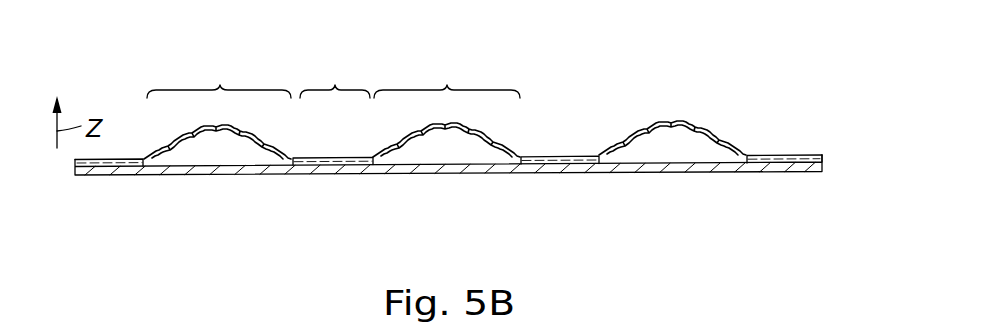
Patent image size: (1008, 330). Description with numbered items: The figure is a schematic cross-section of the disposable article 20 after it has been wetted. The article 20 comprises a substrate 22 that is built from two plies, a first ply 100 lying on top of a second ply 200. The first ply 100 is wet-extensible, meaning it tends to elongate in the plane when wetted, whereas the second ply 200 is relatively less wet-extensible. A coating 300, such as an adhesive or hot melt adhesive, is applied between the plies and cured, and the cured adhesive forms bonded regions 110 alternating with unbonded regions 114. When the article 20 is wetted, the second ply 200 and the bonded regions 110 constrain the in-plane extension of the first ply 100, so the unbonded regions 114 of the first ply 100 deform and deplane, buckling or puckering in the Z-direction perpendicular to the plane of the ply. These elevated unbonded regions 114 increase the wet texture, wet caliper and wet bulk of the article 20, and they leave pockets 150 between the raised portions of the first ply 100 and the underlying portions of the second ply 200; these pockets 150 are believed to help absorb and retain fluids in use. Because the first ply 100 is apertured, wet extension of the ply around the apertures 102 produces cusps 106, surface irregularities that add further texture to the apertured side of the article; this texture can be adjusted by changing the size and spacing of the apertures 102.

The first ply 100 is at (822, 155).
The apertures 102 is at (718, 132).
The cusps 106 is at (224, 131).
The bonded regions 110 is at (335, 80).
The unbonded regions 114 is at (333, 80).
The pockets 150 is at (222, 158).
The second ply 200 is at (788, 175).
The coating 300 is at (110, 170).
The disposable article 20 is at (846, 142).
The substrate 22 is at (833, 170).